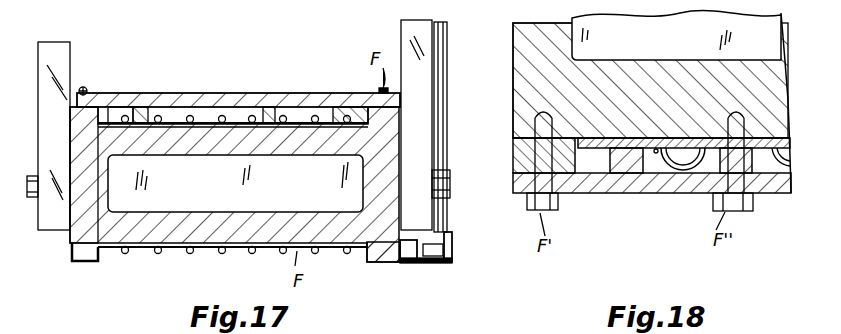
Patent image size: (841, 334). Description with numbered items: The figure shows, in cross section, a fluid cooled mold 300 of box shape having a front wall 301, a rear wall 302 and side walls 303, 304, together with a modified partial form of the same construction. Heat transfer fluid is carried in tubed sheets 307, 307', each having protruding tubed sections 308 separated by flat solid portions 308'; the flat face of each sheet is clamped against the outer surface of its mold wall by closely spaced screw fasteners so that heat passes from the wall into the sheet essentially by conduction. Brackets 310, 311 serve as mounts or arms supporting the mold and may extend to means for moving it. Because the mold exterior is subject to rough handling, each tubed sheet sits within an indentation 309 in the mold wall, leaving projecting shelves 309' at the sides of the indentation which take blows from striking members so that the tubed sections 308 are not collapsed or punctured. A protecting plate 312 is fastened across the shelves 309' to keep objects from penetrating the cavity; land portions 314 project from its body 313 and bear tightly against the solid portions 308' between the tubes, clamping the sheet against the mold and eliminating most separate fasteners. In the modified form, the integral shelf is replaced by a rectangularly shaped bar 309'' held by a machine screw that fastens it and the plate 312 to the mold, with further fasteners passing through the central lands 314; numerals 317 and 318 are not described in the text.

In FIG. 17, the mold 300 is at (61, 271).
In FIG. 18, the mold 300 is at (527, 72).
In FIG. 17, the front wall 301 is at (148, 218).
In FIG. 18, the front wall 301 is at (603, 72).
In FIG. 17, the rear wall 302 is at (181, 140).
In FIG. 17, the side wall 303 is at (96, 159).
In FIG. 17, the side wall 304 is at (385, 163).
In FIG. 17, the tubed sheet 307 is at (232, 271).
In FIG. 18, the tubed sheet 307 is at (681, 197).
In FIG. 17, the tubed sheet 307' is at (205, 90).
In FIG. 17, the tubed section 308 is at (249, 175).
In FIG. 18, the tubed section 308 is at (652, 229).
In FIG. 17, the solid portion 308' is at (246, 271).
In FIG. 17, the indentation 309 is at (123, 269).
In FIG. 17, the projecting shelf 309' is at (240, 187).
In FIG. 18, the rectangularly shaped bar 309'' is at (491, 136).
In FIG. 17, the bracket 310 is at (70, 48).
In FIG. 17, the bracket 311 is at (422, 43).
In FIG. 17, the protecting plate 312 is at (247, 100).
In FIG. 18, the protecting plate 312 is at (588, 192).
In FIG. 17, the body of the plate 313 is at (113, 110).
In FIG. 17, the land portion 314 is at (328, 117).
In FIG. 18, the land portion 314 is at (630, 165).
In FIG. 17, the bottom bar 317 is at (418, 258).
In FIG. 17, the bracket 318 is at (443, 247).